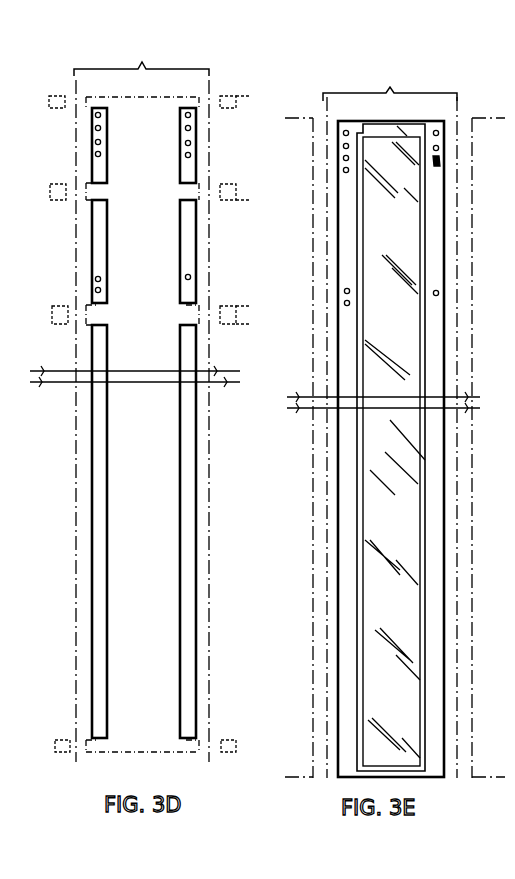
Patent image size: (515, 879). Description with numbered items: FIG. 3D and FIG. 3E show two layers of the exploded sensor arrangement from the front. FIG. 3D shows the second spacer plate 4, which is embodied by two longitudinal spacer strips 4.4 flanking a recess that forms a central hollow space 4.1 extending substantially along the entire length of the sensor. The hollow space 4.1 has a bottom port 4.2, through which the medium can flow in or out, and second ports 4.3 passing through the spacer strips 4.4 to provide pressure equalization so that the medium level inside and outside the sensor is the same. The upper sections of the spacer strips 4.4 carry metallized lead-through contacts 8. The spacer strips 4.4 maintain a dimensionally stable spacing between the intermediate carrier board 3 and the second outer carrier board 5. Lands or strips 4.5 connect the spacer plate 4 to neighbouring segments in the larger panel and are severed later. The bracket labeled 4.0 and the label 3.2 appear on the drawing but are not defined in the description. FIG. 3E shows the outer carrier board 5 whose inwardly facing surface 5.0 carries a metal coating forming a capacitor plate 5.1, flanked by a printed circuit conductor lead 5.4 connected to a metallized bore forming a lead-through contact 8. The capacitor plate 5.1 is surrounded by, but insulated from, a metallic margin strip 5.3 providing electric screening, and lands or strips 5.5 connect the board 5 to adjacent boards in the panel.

In FIG. 3D, the door frame assembly width 4.0 is at (141, 51).
In FIG. 3D, the longitudinal spacer strips 4.4 is at (108, 240).
In FIG. 3D, the metallized lead-through contacts 8 is at (260, 170).
In FIG. 3E, the metallized lead-through contacts 8 is at (430, 143).
In FIG. 3D, the second port 4.3 is at (180, 190).
In FIG. 3D, the hollow space 4.1 is at (131, 343).
In FIG. 3D, the lands or strips 4.5 is at (76, 104).
In FIG. 3D, the bottom port 4.2 is at (142, 740).
In FIG. 3D, the second spacer plate 4 is at (213, 538).
In FIG. 3D, the adjacent element 3.2 is at (19, 336).
In FIG. 3D, the intermediate carrier board 3 is at (10, 568).
In FIG. 3E, the inwardly facing surface 5.0 is at (390, 80).
In FIG. 3E, the second outer carrier board 5 is at (473, 250).
In FIG. 3E, the metallic margin strip 5.3 is at (358, 653).
In FIG. 3E, the capacitor plate 5.1 is at (385, 378).
In FIG. 3E, the printed circuit conductor lead 5.4 is at (352, 290).
In FIG. 3E, the lands or strips 5.5 is at (320, 699).